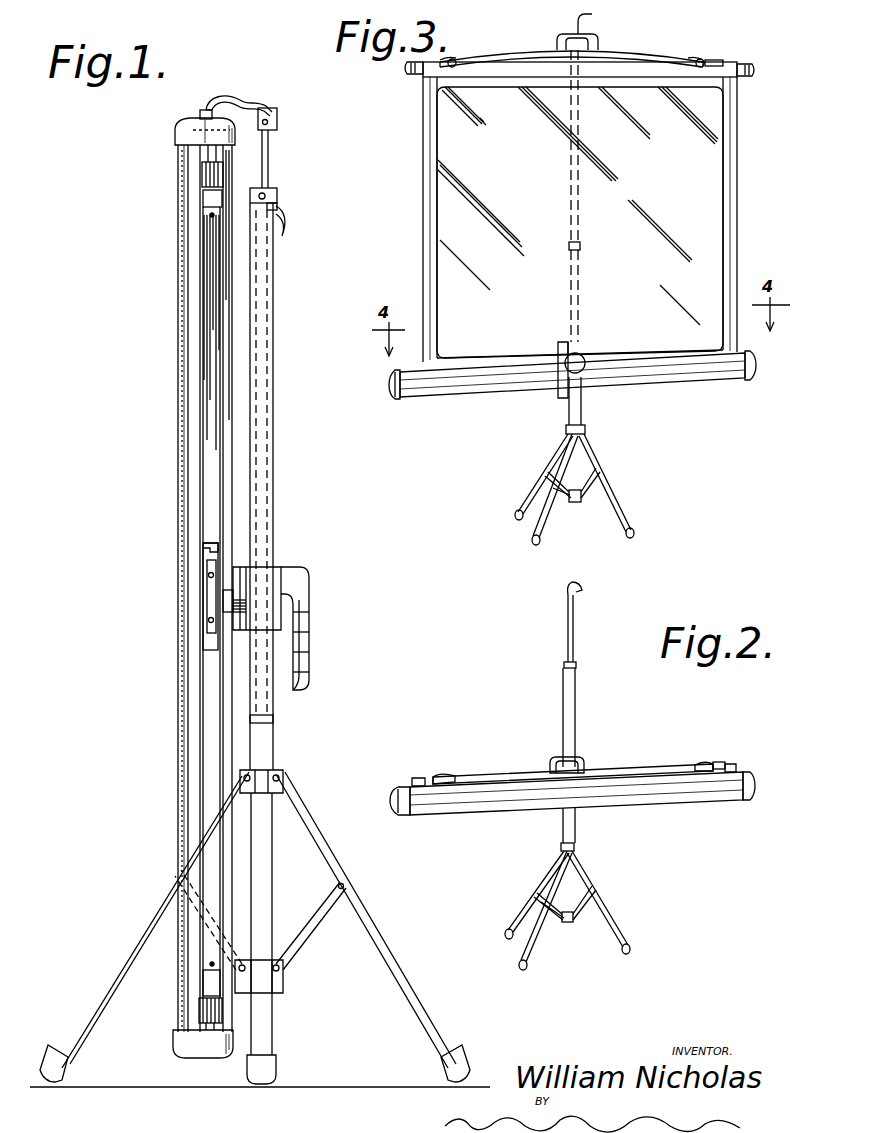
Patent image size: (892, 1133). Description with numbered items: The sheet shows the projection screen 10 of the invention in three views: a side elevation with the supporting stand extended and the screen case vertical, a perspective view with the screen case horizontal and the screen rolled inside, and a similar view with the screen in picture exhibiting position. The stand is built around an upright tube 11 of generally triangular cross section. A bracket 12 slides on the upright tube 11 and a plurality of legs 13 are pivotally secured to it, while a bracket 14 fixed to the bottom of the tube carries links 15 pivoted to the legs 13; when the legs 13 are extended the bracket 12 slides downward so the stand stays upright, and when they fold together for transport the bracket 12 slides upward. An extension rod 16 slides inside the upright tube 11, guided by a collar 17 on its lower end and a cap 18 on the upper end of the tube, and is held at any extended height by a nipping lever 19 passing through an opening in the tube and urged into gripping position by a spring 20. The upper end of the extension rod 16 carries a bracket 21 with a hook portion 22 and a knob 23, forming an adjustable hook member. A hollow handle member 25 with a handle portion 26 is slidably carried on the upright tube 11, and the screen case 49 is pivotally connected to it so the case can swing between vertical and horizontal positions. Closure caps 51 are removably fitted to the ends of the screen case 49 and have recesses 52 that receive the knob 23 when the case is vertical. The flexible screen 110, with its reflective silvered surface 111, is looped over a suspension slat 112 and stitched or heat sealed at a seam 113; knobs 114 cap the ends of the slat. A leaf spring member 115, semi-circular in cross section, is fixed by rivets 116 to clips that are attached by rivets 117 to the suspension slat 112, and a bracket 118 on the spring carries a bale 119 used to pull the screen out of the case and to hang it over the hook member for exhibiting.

In FIG. 1, the projection screen 10 is at (297, 465).
In FIG. 3, the projection screen 10 is at (755, 184).
In FIG. 2, the projection screen 10 is at (688, 742).
In FIG. 1, the upright tube 11 is at (275, 496).
In FIG. 3, the upright tube 11 is at (584, 403).
In FIG. 2, the upright tube 11 is at (562, 686).
In FIG. 1, the bracket 12 is at (282, 768).
In FIG. 3, the bracket 12 is at (586, 430).
In FIG. 2, the bracket 12 is at (575, 847).
In FIG. 1, the legs 13 is at (115, 975).
In FIG. 3, the legs 13 is at (526, 497).
In FIG. 2, the legs 13 is at (518, 920).
In FIG. 1, the bracket 14 is at (283, 980).
In FIG. 3, the bracket 14 is at (575, 502).
In FIG. 2, the bracket 14 is at (570, 922).
In FIG. 1, the links 15 is at (308, 920).
In FIG. 3, the links 15 is at (600, 482).
In FIG. 2, the links 15 is at (595, 905).
In FIG. 1, the extension rod 16 is at (270, 156).
In FIG. 3, the extension rod 16 is at (582, 192).
In FIG. 2, the extension rod 16 is at (566, 622).
In FIG. 1, the collar 17 is at (275, 719).
In FIG. 1, the cap 18 is at (277, 193).
In FIG. 1, the nipping lever 19 is at (286, 221).
In FIG. 1, the spring 20 is at (278, 205).
In FIG. 1, the bracket 21 is at (268, 108).
In FIG. 3, the bracket 21 is at (586, 23).
In FIG. 2, the bracket 21 is at (582, 588).
In FIG. 1, the hook portion 22 is at (246, 101).
In FIG. 1, the knob 23 is at (200, 116).
In FIG. 1, the hollow handle member 25 is at (290, 567).
In FIG. 3, the hollow handle member 25 is at (585, 355).
In FIG. 1, the handle portion 26 is at (309, 636).
In FIG. 1, the screen case 49 is at (186, 727).
In FIG. 3, the screen case 49 is at (490, 385).
In FIG. 2, the screen case 49 is at (490, 800).
In FIG. 1, the closure caps 51 is at (180, 143).
In FIG. 3, the closure caps 51 is at (402, 400).
In FIG. 2, the closure caps 51 is at (400, 814).
In FIG. 1, the recesses 52 is at (193, 130).
In FIG. 3, the flexible screen 110 is at (730, 243).
In FIG. 3, the reflective silvered surface 111 is at (700, 210).
In FIG. 1, the suspension slat 112 is at (208, 202).
In FIG. 3, the suspension slat 112 is at (728, 62).
In FIG. 2, the suspension slat 112 is at (722, 765).
In FIG. 3, the seam 113 is at (430, 88).
In FIG. 1, the knobs 114 is at (202, 180).
In FIG. 3, the knobs 114 is at (420, 75).
In FIG. 2, the knobs 114 is at (418, 776).
In FIG. 1, the leaf spring member 115 is at (193, 405).
In FIG. 3, the leaf spring member 115 is at (652, 50).
In FIG. 2, the leaf spring member 115 is at (630, 768).
In FIG. 1, the rivets 116 is at (212, 216).
In FIG. 1, the rivets 117 is at (196, 221).
In FIG. 3, the rivets 117 is at (456, 60).
In FIG. 2, the rivets 117 is at (455, 778).
In FIG. 1, the bracket 118 is at (207, 590).
In FIG. 3, the bracket 118 is at (600, 42).
In FIG. 2, the bracket 118 is at (550, 768).
In FIG. 1, the bale 119 is at (207, 552).
In FIG. 3, the bale 119 is at (565, 40).
In FIG. 2, the bale 119 is at (574, 758).